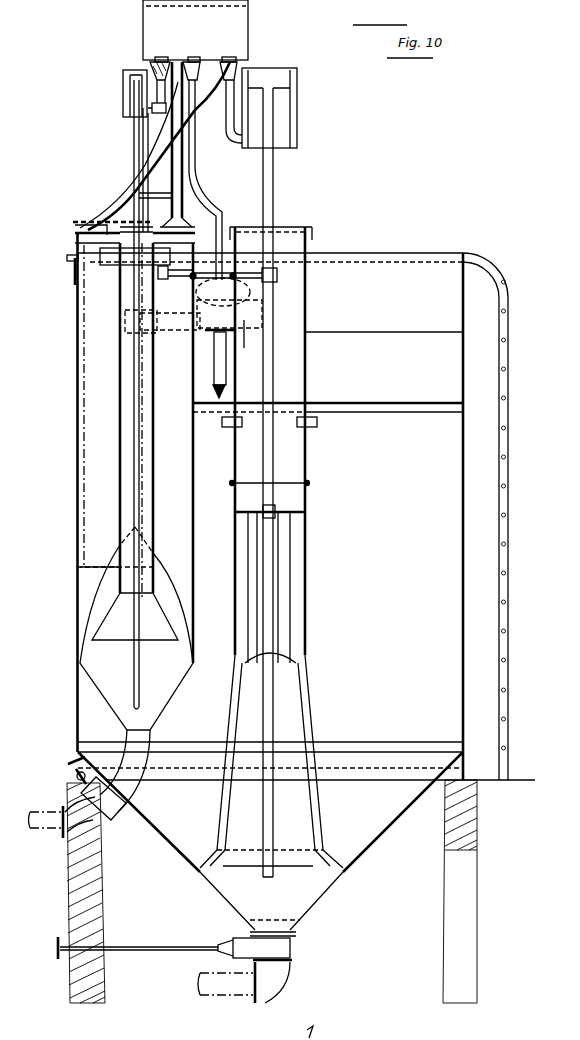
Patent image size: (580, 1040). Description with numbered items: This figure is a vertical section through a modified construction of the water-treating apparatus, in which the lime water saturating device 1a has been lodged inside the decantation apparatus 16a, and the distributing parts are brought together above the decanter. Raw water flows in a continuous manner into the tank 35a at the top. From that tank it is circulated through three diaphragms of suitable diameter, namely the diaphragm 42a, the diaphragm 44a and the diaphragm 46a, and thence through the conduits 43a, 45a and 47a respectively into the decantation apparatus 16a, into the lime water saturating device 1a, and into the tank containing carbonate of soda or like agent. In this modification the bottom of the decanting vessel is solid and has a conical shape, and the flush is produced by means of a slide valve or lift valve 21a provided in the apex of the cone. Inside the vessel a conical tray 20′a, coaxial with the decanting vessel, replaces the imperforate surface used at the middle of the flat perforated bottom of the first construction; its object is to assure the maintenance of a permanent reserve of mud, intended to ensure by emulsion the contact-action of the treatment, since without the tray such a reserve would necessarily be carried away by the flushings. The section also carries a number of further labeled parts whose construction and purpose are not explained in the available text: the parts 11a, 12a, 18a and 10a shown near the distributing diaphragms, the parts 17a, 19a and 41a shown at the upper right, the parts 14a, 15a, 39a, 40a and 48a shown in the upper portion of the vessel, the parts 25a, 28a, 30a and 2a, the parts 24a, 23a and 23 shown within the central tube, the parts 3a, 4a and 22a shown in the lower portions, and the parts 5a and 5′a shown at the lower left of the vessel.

The tank 35a is at (228, 12).
The diaphragm 44a is at (157, 60).
The diaphragm 46a is at (193, 58).
The diaphragm 42a is at (233, 60).
The valve housing 11a is at (123, 88).
The pipe connection 12a is at (152, 107).
The conduit 45a is at (160, 118).
The conduit 43a is at (233, 110).
The elbow 18a is at (233, 133).
The rod 10a is at (134, 161).
The conduit 47a is at (193, 184).
The cylinder 17a is at (290, 128).
The central rod 19a is at (273, 186).
The flange 41a is at (218, 221).
The bracket 14a is at (77, 260).
The pipe 15a is at (160, 272).
The float 39a is at (205, 298).
The rod 40a is at (244, 340).
The plunger 48a is at (215, 361).
The inner tube 25a is at (303, 371).
The chamber 28a is at (384, 355).
The outer vessel 30a is at (90, 389).
The tube 2a is at (121, 448).
The lime water saturating device 1a is at (185, 458).
The decantation apparatus 16a is at (448, 489).
The cross bracket 24a is at (306, 513).
The tube 23a is at (252, 561).
The tube 23 is at (285, 561).
The funnel 3a is at (178, 640).
The hopper 4a is at (176, 701).
The conical tube 22a is at (291, 716).
The discharge pipe 5′a is at (132, 763).
The valve 5a is at (100, 791).
The conical tray 20′a is at (240, 892).
The slide valve or lift valve 21a is at (286, 949).